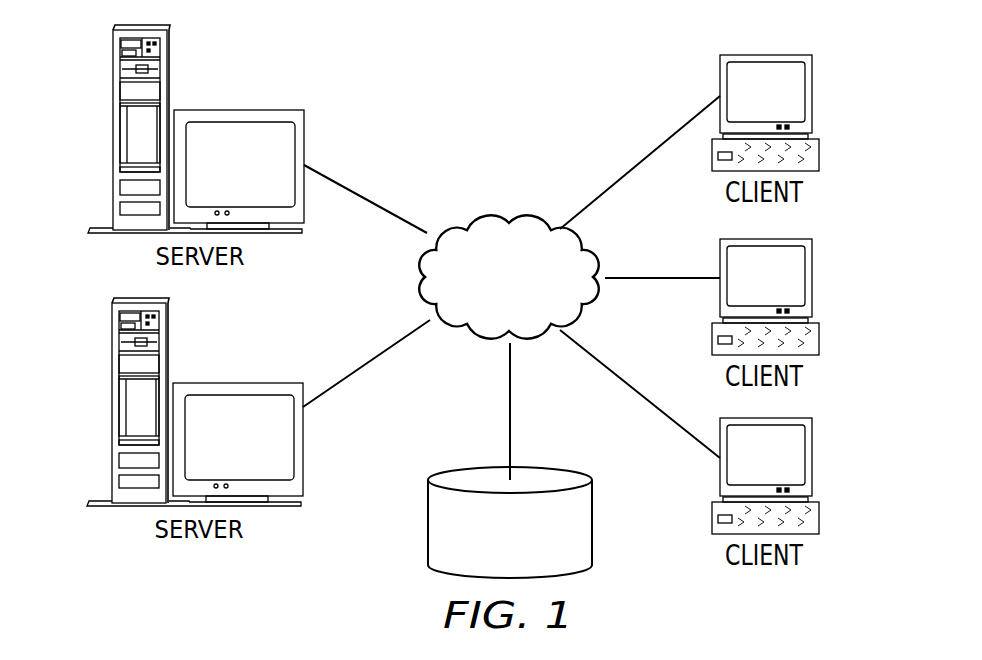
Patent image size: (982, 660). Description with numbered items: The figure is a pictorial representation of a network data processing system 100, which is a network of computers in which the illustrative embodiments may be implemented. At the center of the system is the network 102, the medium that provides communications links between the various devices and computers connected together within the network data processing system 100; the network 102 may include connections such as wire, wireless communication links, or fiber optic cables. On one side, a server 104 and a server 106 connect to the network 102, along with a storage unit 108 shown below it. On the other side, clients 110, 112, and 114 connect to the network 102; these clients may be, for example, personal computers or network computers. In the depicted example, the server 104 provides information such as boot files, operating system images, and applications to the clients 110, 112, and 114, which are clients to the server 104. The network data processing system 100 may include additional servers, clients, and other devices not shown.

The network data processing system 100 is at (578, 78).
The network 102 is at (473, 212).
The server 104 is at (112, 130).
The server 106 is at (111, 402).
The storage unit 108 is at (427, 535).
The client 110 is at (812, 93).
The client 112 is at (812, 277).
The client 114 is at (812, 458).